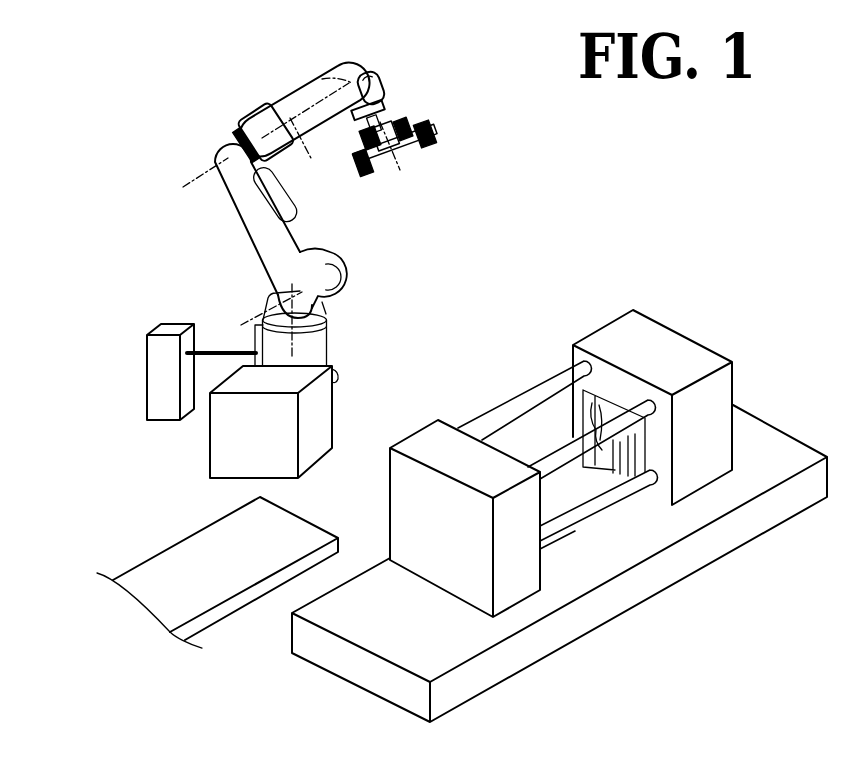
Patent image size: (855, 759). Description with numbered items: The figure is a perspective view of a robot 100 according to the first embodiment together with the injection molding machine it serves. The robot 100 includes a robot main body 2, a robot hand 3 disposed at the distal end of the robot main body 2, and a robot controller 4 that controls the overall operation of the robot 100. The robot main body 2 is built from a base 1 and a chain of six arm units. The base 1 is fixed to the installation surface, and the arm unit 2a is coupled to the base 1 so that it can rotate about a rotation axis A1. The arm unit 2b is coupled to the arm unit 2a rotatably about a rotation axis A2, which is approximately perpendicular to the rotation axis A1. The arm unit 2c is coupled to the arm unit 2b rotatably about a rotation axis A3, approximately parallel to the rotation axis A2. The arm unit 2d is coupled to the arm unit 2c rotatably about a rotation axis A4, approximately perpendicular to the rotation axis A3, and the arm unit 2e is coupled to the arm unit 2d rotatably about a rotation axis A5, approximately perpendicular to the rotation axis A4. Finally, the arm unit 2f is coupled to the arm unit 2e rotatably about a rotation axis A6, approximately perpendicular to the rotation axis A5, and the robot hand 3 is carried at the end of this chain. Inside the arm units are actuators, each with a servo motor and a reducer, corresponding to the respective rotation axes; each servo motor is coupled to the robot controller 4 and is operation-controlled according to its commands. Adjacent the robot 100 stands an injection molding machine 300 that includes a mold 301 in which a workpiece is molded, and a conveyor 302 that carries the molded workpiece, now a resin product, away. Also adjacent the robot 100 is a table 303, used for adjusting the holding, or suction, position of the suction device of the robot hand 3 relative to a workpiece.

The robot 100 is at (193, 157).
The base 1 is at (298, 348).
The robot main body 2 is at (235, 133).
The arm unit 2a is at (275, 300).
The arm unit 2b is at (255, 218).
The arm unit 2c is at (263, 130).
The arm unit 2d is at (303, 107).
The arm unit 2e is at (380, 85).
The arm unit 2f is at (380, 106).
The robot hand 3 is at (388, 179).
The robot controller 4 is at (168, 330).
The rotation axis A1 is at (325, 313).
The rotation axis A2 is at (253, 320).
The rotation axis A3 is at (187, 178).
The rotation axis A4 is at (305, 138).
The rotation axis A5 is at (342, 68).
The rotation axis A6 is at (393, 157).
The injection molding machine 300 is at (790, 447).
The mold 301 is at (592, 408).
The conveyor 302 is at (162, 578).
The table 303 is at (320, 395).